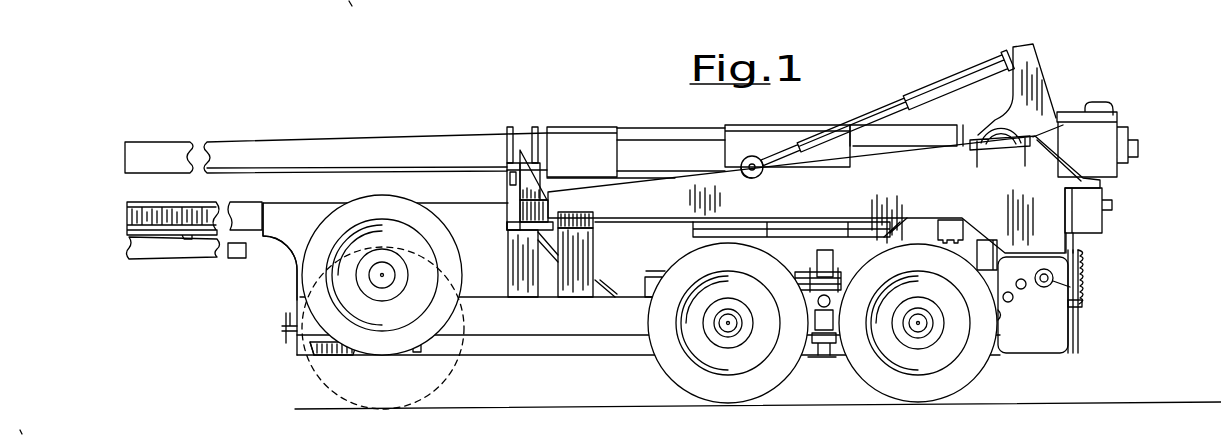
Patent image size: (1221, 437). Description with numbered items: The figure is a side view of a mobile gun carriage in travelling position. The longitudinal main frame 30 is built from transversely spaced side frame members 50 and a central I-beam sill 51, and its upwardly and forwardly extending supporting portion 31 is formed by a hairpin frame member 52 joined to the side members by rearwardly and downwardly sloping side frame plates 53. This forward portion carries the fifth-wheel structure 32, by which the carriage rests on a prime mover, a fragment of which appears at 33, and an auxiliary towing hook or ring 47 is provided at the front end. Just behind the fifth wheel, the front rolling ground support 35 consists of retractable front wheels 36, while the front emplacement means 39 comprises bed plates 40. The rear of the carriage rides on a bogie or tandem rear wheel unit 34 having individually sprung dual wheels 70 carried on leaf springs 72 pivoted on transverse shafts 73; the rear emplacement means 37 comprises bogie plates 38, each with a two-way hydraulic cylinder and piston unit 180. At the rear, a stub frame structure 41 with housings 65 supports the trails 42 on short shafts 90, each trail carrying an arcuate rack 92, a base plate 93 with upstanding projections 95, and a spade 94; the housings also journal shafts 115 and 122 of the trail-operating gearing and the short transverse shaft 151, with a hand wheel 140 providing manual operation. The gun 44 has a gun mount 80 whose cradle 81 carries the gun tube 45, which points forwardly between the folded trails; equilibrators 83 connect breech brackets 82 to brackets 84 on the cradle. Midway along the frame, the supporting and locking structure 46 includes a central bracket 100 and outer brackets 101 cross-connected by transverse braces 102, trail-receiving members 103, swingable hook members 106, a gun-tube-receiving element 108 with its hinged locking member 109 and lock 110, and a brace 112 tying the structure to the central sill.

The longitudinal main frame 30 is at (604, 372).
The upwardly and forwardly extending supporting portion 31 is at (248, 200).
The fifth-wheel structure 32 is at (187, 241).
The prime mover 33 is at (199, 256).
The bogie or tandem rear wheel unit 34 is at (982, 383).
The front rolling ground support 35 is at (417, 345).
The retractable front wheels 36 is at (377, 199).
The rear emplacement means 37 is at (838, 360).
The bogie plates 38 is at (806, 333).
The front emplacement means 39 is at (324, 361).
The bed plates 40 is at (350, 355).
The stub frame structure 41 is at (1070, 341).
The trails 42 is at (830, 201).
The gun 44 is at (794, 117).
The gun tube 45 is at (456, 143).
The supporting and locking structure 46 is at (500, 227).
The auxiliary towing hook or ring 47 is at (285, 330).
The side frame members 50 is at (487, 307).
The central frame member or sill 51 is at (508, 352).
The frame member 52 is at (142, 211).
The side frame plates 53 is at (290, 216).
The housing 65 is at (1080, 250).
The dual wheels 70 is at (858, 374).
The leaf spring 72 is at (796, 275).
The transverse shaft 73 is at (818, 301).
The gun mount 80 is at (945, 222).
The cradle 81 is at (696, 228).
The upstanding brackets 82 is at (1030, 80).
The equilibrators 83 is at (968, 74).
The brackets 84 is at (755, 156).
The short shaft 90 is at (1080, 289).
The gear segment or arcuate rack 92 is at (1084, 270).
The base plate 93 is at (977, 123).
The spade 94 is at (537, 192).
The upstanding projections 95 is at (1010, 147).
The central upstanding bracket portion 100 is at (518, 256).
The upstanding bracket members 101 is at (596, 245).
The transverse brace members 102 is at (511, 232).
The trail-receiving member 103 is at (596, 218).
The hook member 106 is at (592, 183).
The gun-tube-receiving element 108 is at (507, 196).
The locking member 109 is at (512, 130).
The lock 110 is at (507, 177).
The brace 112 is at (594, 281).
The short shaft 115 is at (1024, 288).
The short shaft 122 is at (1008, 302).
The hand wheel 140 is at (668, 259).
The short transverse shaft 151 is at (1003, 318).
The two-way hydraulic cylinder and piston unit 180 is at (817, 253).